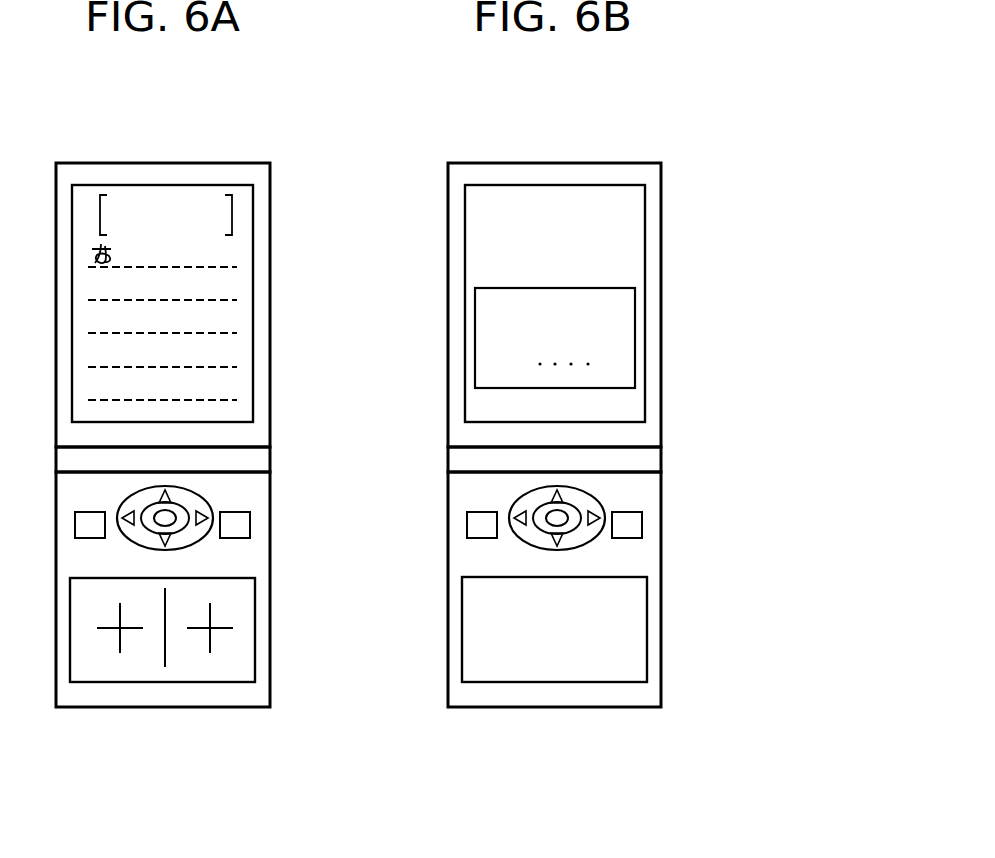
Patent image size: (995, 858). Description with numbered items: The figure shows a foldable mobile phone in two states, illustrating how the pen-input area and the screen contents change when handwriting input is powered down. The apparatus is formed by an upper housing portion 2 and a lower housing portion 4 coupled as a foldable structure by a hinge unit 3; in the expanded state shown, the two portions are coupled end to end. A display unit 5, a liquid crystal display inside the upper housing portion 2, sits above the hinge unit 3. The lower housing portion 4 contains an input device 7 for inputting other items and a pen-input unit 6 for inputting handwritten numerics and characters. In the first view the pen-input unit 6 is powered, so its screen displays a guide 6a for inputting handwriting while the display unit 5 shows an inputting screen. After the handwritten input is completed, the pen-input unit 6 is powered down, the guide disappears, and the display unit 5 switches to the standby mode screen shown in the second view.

In FIG. 6A, the upper housing portion 2 is at (213, 163).
In FIG. 6B, the upper housing portion 2 is at (585, 163).
In FIG. 6B, the hinge unit 3 is at (652, 460).
In FIG. 6B, the lower housing portion 4 is at (568, 707).
In FIG. 6A, the display unit 5 is at (253, 277).
In FIG. 6B, the display unit 5 is at (645, 323).
In FIG. 6A, the pen-input unit 6 is at (255, 636).
In FIG. 6B, the pen-input unit 6 is at (648, 636).
In FIG. 6A, the guide for inputting handwriting 6a is at (210, 643).
In FIG. 6A, the input device 7 is at (251, 479).
In FIG. 6B, the input device 7 is at (643, 479).